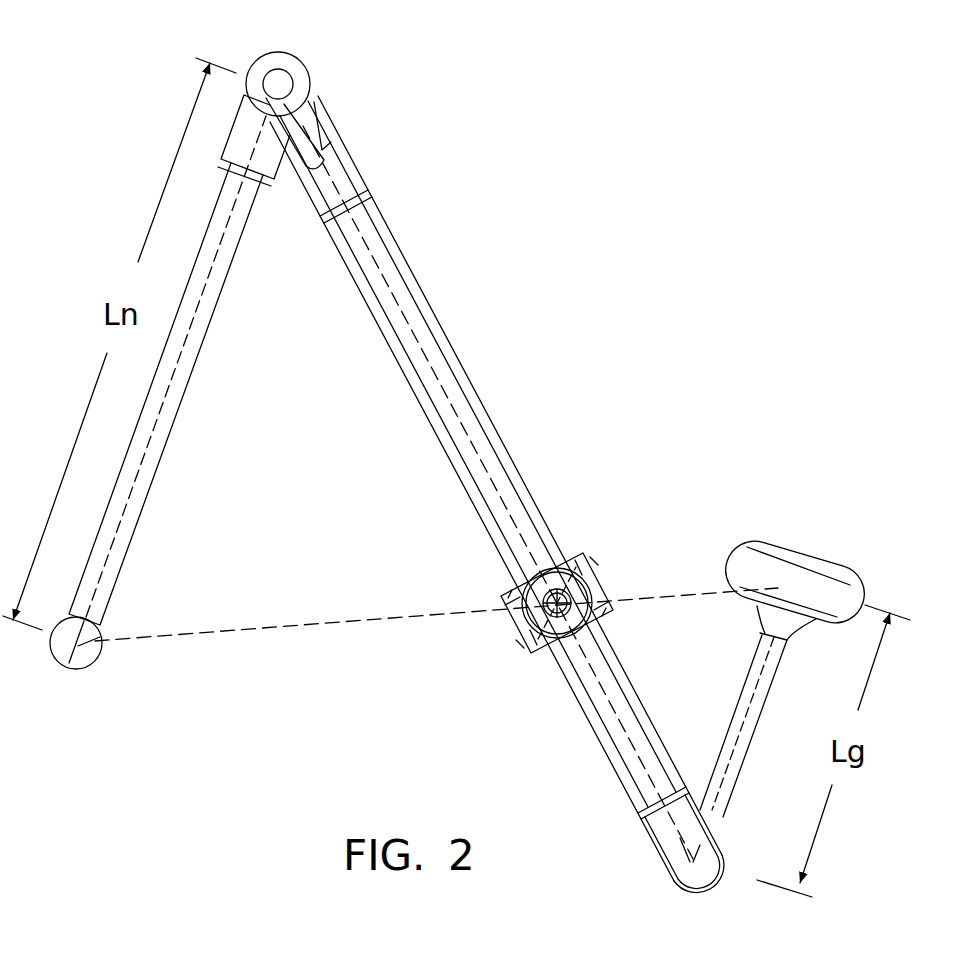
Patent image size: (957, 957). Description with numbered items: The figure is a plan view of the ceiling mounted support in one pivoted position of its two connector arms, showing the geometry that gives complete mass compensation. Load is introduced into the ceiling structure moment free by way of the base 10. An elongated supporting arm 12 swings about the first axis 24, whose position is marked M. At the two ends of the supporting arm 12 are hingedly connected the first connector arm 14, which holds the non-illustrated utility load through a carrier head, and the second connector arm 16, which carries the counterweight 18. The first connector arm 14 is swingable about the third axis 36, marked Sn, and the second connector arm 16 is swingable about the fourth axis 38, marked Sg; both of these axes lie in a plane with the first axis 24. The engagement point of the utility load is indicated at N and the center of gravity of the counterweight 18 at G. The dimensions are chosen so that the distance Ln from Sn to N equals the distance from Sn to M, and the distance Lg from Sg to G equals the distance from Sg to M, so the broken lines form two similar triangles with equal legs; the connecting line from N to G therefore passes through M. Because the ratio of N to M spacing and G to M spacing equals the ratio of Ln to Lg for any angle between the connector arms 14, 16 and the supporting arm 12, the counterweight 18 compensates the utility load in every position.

The base 10 is at (522, 652).
The supporting arm 12 is at (467, 376).
The first connector arm 14 is at (167, 442).
The second connector arm 16 is at (752, 745).
The counterweight 18 is at (787, 547).
The first axis 24 is at (562, 597).
The third axis 36 is at (283, 90).
The fourth axis 38 is at (703, 865).
The engagement point of the utility load N is at (82, 650).
The center of gravity of the counterweight G is at (805, 583).